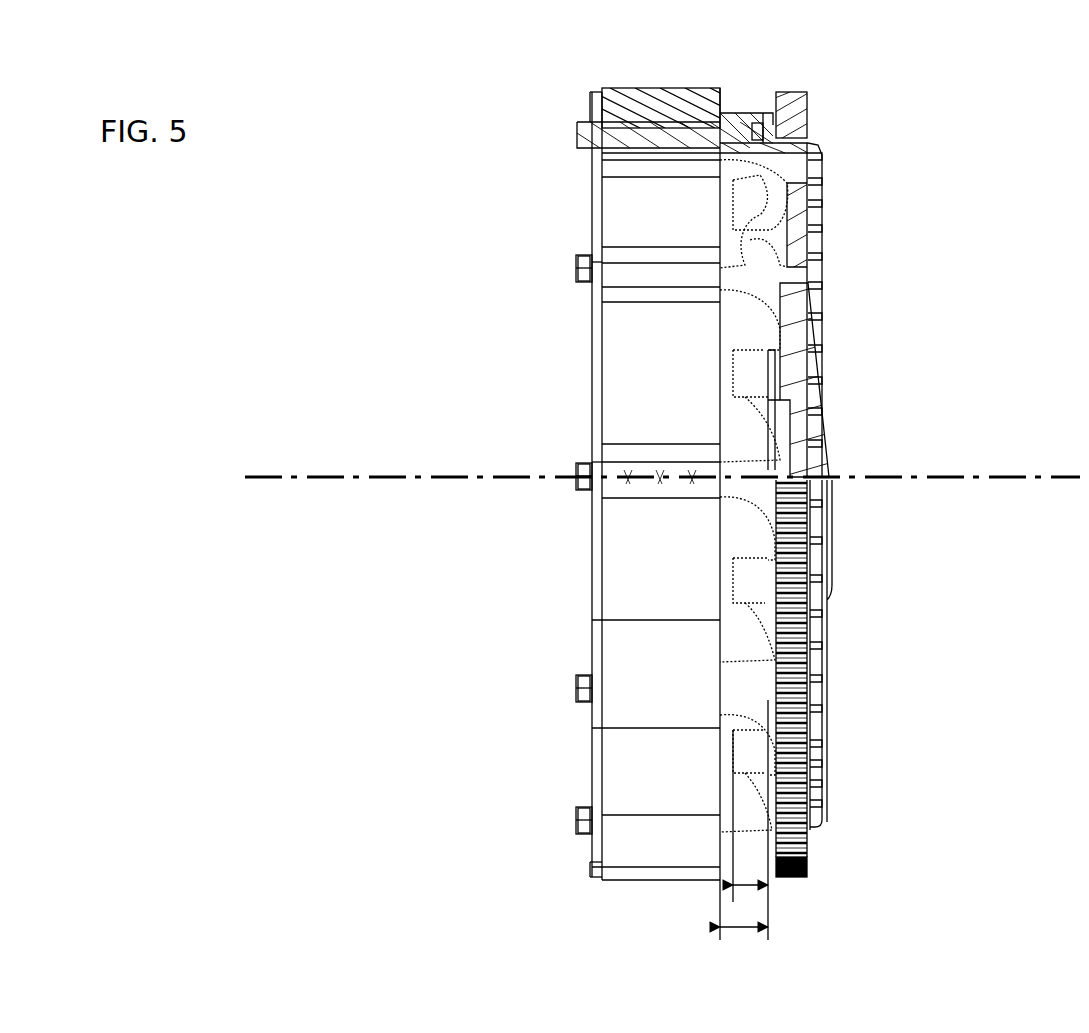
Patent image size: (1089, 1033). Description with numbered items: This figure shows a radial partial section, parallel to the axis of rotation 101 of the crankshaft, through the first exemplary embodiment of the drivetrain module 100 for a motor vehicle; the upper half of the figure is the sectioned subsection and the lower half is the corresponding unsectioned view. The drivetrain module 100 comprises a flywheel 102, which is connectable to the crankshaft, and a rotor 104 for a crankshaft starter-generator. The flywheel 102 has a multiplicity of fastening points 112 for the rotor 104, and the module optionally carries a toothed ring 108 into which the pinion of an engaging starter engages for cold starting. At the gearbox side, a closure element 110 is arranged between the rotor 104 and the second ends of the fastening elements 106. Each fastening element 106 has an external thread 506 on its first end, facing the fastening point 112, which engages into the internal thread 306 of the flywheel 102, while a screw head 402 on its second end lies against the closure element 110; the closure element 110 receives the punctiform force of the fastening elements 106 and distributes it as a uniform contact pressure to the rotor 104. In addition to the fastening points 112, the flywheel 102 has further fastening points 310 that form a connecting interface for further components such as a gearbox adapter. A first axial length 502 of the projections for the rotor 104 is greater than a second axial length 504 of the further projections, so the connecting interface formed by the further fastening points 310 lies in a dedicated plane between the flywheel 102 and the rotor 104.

The drivetrain module 100 is at (139, 207).
The axis of rotation 101 is at (928, 482).
The flywheel 102 is at (800, 387).
The rotor 104 is at (602, 104).
The fastening element 106 is at (616, 158).
The toothed ring 108 is at (797, 117).
The closure element 110 is at (597, 593).
The fastening points 112 is at (763, 153).
The internal thread 306 is at (741, 140).
The further fastening points 310 is at (758, 757).
The screw head 402 is at (577, 138).
The first axial length 502 is at (742, 923).
The second axial length 504 is at (752, 888).
The external thread 506 is at (757, 130).